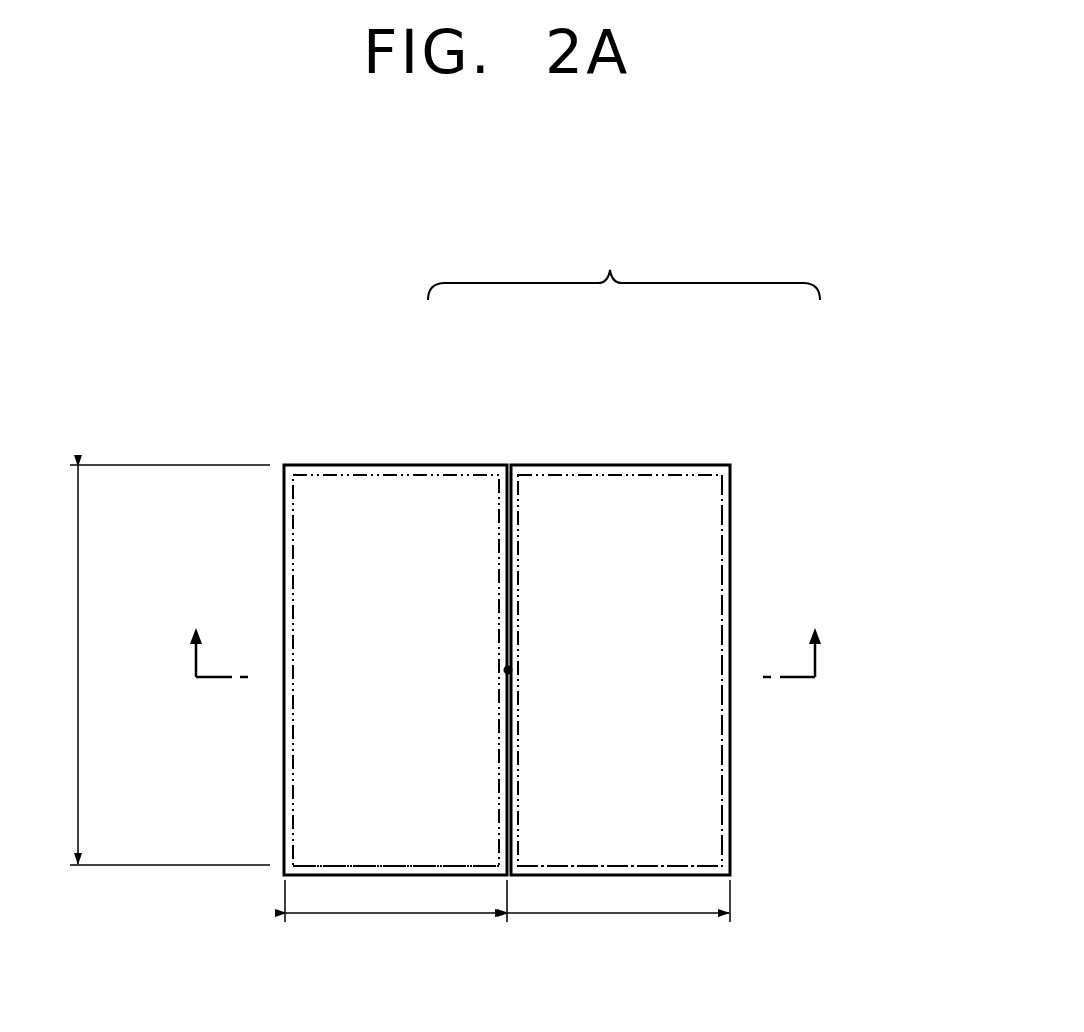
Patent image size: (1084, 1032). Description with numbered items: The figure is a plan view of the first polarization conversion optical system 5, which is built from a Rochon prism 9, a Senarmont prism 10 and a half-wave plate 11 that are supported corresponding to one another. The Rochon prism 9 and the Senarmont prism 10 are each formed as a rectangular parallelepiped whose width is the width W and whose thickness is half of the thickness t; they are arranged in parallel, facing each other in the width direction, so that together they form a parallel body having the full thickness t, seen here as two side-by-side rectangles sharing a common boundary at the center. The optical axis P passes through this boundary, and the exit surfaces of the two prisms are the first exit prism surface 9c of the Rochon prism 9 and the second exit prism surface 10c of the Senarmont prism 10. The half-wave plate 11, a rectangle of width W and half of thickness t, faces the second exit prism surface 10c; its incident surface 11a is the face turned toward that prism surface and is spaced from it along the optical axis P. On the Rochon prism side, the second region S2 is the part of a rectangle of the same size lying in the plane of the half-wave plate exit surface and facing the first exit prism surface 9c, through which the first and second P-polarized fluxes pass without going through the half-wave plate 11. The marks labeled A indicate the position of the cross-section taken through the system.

The first polarization conversion optical system 5 is at (627, 262).
The Rochon prism 9 is at (396, 466).
The Senarmont prism 10 is at (598, 467).
The half-wave plate 11 is at (665, 521).
The incident surface 11a is at (705, 556).
The first exit prism surface 9c is at (353, 819).
The second exit prism surface 10c is at (683, 796).
The optical axis P is at (512, 670).
The second region S2 is at (312, 565).
The width W is at (152, 665).
The thickness t is at (370, 955).
The section line A- A is at (511, 667).